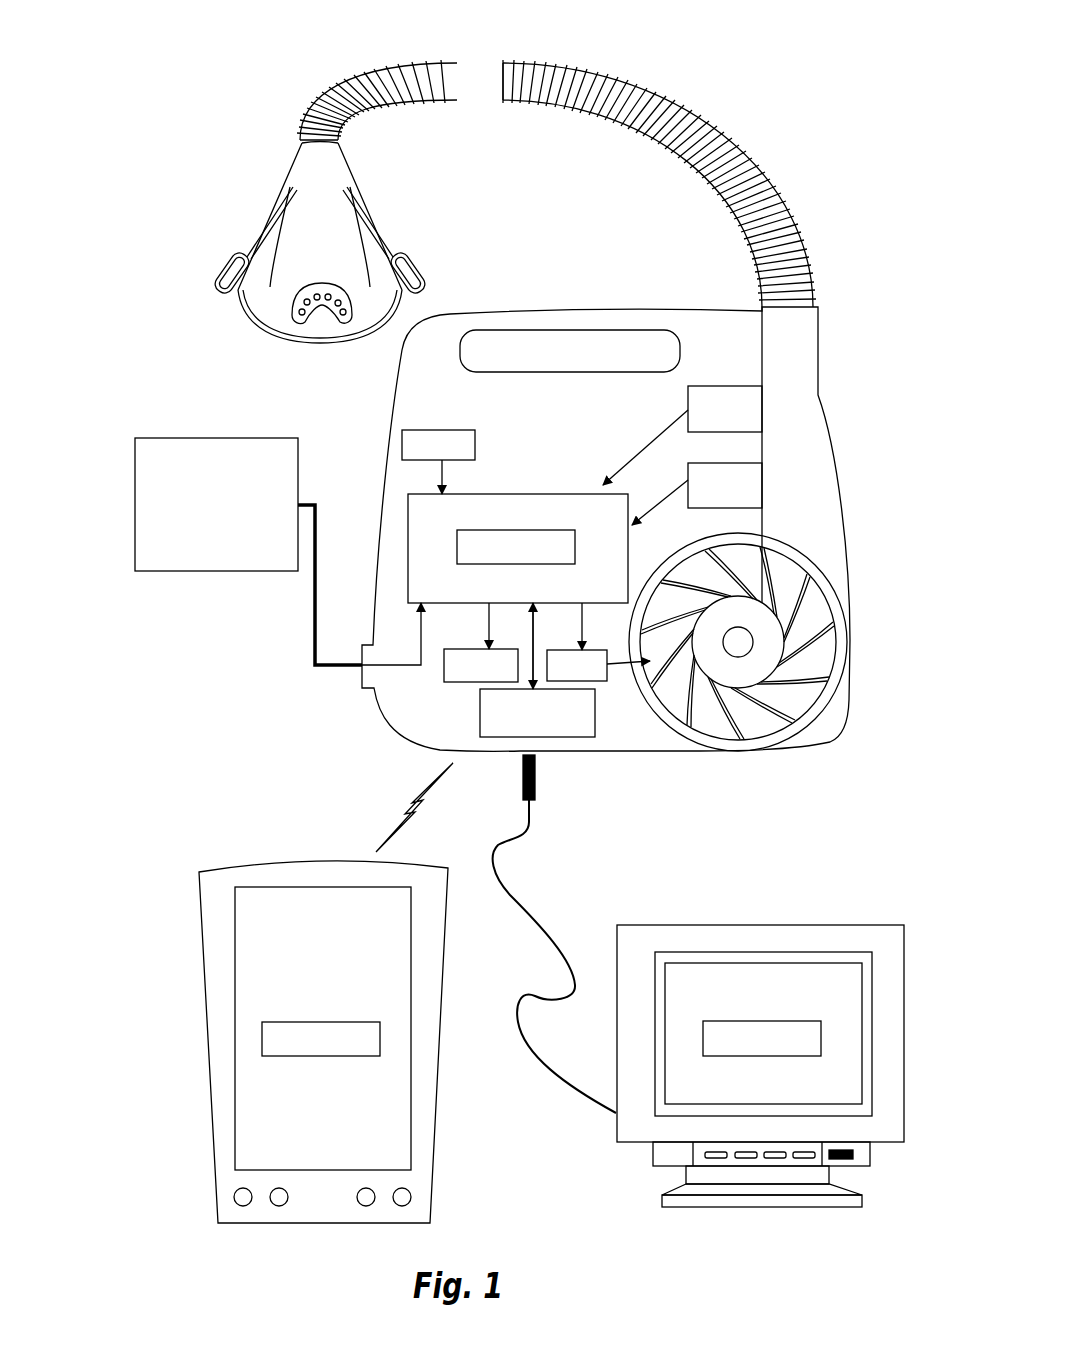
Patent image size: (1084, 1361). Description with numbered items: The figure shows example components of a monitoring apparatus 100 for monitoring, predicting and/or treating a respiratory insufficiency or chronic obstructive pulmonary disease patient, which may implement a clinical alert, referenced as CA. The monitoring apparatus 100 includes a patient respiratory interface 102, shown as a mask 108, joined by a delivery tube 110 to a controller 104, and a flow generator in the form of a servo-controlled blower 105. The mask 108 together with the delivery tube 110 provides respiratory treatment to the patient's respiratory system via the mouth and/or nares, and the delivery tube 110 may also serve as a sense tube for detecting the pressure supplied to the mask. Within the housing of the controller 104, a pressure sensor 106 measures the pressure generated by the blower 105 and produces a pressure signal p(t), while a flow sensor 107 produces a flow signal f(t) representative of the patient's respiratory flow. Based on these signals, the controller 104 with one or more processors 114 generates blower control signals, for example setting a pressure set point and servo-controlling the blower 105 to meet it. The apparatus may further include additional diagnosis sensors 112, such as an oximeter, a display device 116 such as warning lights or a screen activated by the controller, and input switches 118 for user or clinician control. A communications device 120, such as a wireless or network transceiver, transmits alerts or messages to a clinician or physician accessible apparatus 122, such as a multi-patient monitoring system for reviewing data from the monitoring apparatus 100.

The monitoring apparatus 100 is at (741, 66).
The patient respiratory interface 102 is at (281, 103).
The controller 104 is at (510, 375).
The servo-controlled blower 105 is at (767, 747).
The pressure sensor 106 is at (746, 421).
The flow sensor 107 is at (746, 498).
The mask 108 is at (231, 305).
The delivery tube 110 is at (622, 122).
The diagnosis sensors 112 is at (240, 570).
The processors 114 is at (542, 490).
The display device 116 is at (440, 679).
The input switches 118 is at (432, 430).
The communications device 120 is at (558, 737).
The clinician or physician accessible apparatus 122 is at (289, 856).